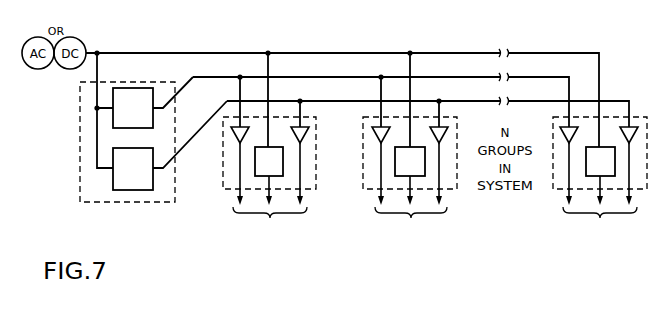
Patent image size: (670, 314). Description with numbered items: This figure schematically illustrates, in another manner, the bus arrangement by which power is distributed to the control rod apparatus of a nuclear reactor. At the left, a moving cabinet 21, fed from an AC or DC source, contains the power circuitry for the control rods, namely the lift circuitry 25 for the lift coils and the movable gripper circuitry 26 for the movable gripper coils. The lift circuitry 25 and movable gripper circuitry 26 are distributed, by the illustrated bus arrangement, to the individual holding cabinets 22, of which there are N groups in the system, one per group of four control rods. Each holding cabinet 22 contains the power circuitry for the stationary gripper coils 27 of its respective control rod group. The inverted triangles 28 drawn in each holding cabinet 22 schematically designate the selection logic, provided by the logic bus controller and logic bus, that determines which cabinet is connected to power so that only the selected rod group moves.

The moving cabinet 21 is at (153, 203).
The holding cabinets 22 is at (435, 205).
The lift circuitry 25 is at (137, 88).
The movable gripper circuitry 26 is at (153, 178).
The stationary gripper coil power circuitry 27 is at (255, 163).
The selection logic 28 is at (235, 137).